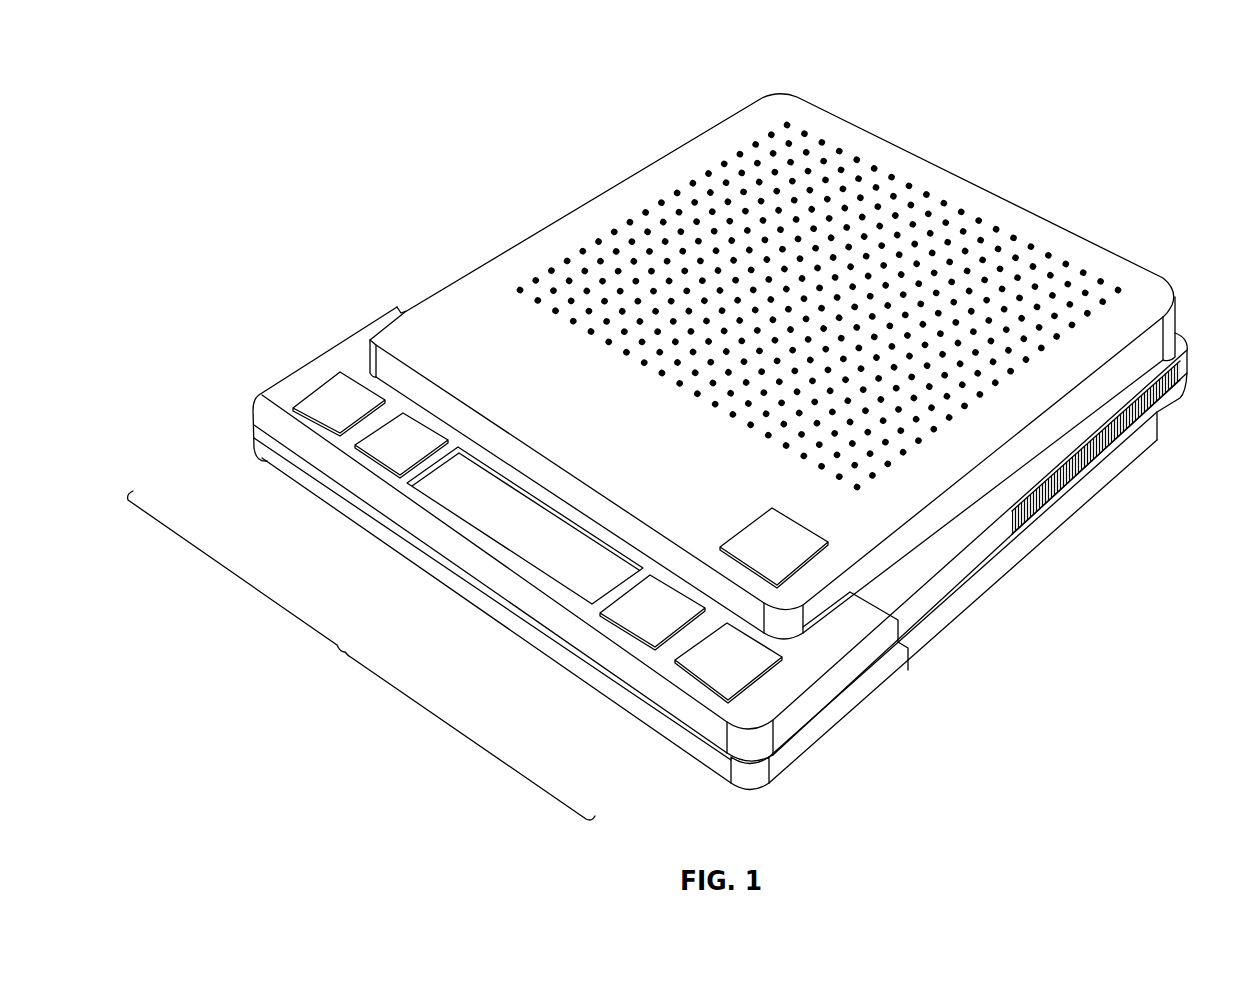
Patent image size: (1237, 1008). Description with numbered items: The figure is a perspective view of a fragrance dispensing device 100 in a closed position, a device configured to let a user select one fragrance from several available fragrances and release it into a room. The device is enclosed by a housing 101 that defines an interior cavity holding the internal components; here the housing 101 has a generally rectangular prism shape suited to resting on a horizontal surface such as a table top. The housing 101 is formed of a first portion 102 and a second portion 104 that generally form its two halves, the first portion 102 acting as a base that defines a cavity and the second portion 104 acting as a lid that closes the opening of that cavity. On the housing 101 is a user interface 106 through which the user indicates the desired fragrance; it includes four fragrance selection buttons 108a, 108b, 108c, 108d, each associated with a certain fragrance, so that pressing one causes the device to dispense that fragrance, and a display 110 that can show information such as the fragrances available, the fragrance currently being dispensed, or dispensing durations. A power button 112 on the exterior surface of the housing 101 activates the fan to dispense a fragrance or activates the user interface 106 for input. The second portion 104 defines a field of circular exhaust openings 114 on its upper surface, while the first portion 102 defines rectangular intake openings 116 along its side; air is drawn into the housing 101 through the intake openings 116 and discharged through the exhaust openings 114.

The fragrance dispensing device 100 is at (287, 79).
The housing 101 is at (1085, 158).
The first portion 102 is at (905, 622).
The second portion 104 is at (472, 294).
The user interface 106 is at (361, 655).
The fragrance selection button 108a is at (330, 408).
The fragrance selection button 108b is at (385, 452).
The fragrance selection button 108c is at (647, 623).
The fragrance selection button 108d is at (717, 672).
The display 110 is at (493, 520).
The power button 112 is at (752, 535).
The exhaust openings 114 is at (880, 207).
The intake openings 116 is at (1110, 468).